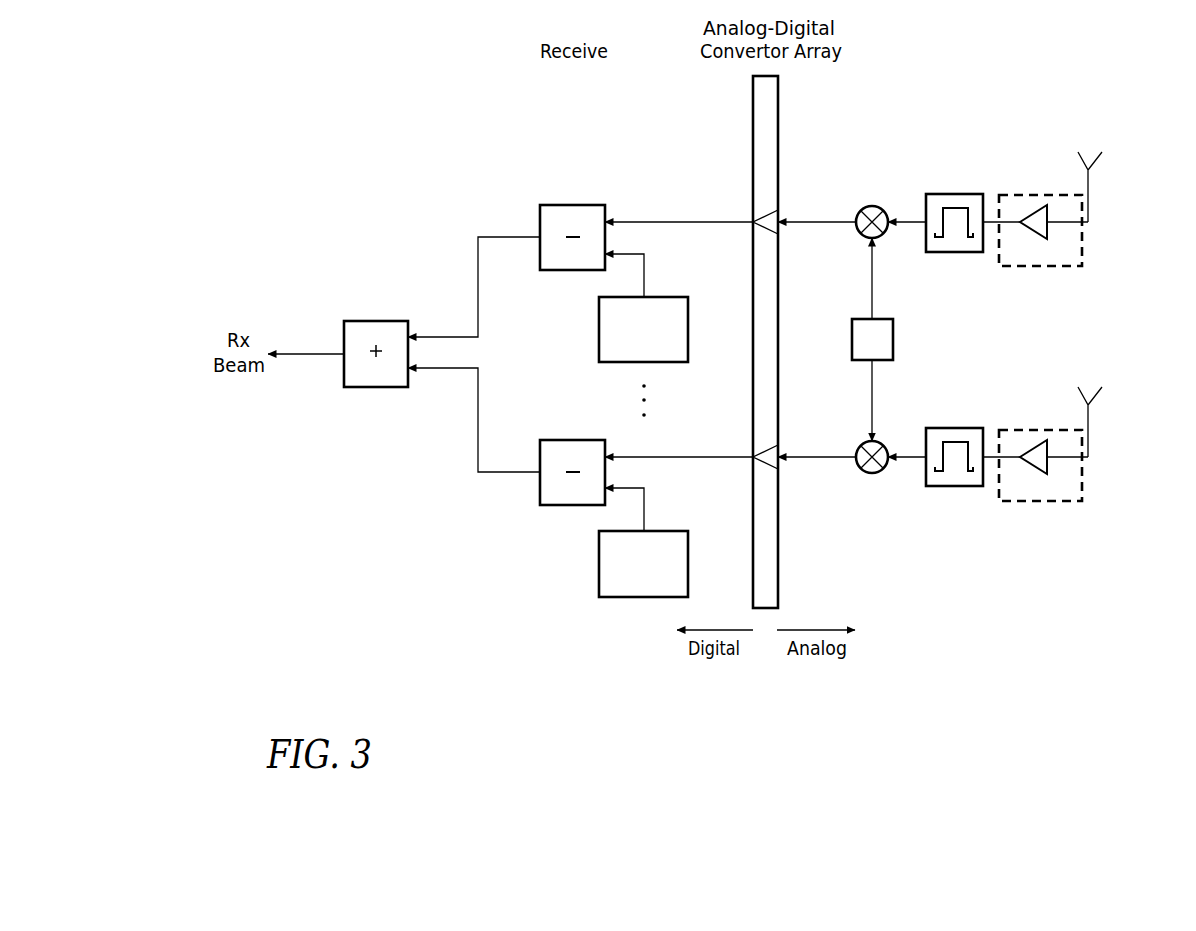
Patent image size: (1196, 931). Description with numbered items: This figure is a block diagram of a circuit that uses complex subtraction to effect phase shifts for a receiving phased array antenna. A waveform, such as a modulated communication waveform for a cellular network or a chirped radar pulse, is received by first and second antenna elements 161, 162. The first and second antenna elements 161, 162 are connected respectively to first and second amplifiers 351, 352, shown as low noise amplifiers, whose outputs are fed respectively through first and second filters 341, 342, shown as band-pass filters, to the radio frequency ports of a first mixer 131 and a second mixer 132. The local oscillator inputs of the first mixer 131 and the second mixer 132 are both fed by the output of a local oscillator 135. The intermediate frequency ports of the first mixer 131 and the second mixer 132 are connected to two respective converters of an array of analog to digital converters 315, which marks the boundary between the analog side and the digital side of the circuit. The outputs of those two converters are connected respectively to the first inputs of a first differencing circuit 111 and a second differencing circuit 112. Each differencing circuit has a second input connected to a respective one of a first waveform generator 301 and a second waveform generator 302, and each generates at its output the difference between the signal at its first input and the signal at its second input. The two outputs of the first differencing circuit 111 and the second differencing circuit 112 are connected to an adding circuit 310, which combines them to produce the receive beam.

The first differencing circuit 111 is at (573, 205).
The second differencing circuit 112 is at (573, 440).
The first mixer 131 is at (872, 206).
The second mixer 132 is at (872, 473).
The local oscillator 135 is at (893, 338).
The first antenna element 161 is at (1093, 162).
The second antenna element 162 is at (1093, 397).
The first waveform generator 301 is at (665, 297).
The second waveform generator 302 is at (665, 531).
The adding circuit 310 is at (372, 321).
The array of analog to digital converters 315 is at (778, 125).
The first filter 341 is at (940, 194).
The second filter 342 is at (940, 428).
The first amplifier 351 is at (1020, 195).
The second amplifier 352 is at (1020, 430).